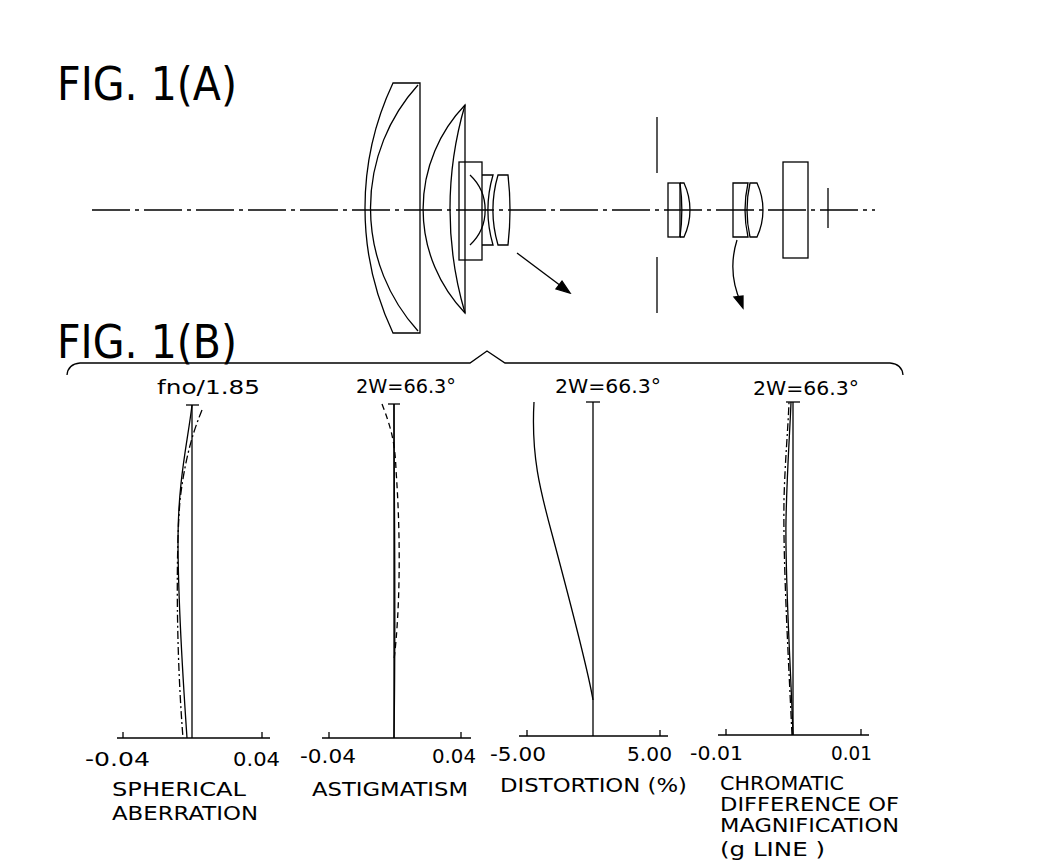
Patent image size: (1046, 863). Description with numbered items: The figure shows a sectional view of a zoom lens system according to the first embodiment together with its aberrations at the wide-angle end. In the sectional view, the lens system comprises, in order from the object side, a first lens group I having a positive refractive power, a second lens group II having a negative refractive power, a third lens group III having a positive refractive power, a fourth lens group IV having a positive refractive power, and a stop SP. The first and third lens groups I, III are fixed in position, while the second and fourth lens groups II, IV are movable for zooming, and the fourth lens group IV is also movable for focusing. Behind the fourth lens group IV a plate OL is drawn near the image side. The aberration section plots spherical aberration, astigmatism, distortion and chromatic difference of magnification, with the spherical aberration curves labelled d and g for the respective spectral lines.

In FIG. 1A, the first lens group I is at (460, 64).
In FIG. 1A, the second lens group II is at (515, 64).
In FIG. 1A, the third lens group III is at (650, 64).
In FIG. 1A, the fourth lens group IV is at (718, 64).
In FIG. 1A, the stop SP is at (655, 270).
In FIG. 1A, the optical low-pass filter OL is at (807, 160).
In FIG. 1B, the d-line spherical aberration curve d is at (177, 534).
In FIG. 1B, the g-line spherical aberration curve g is at (178, 553).